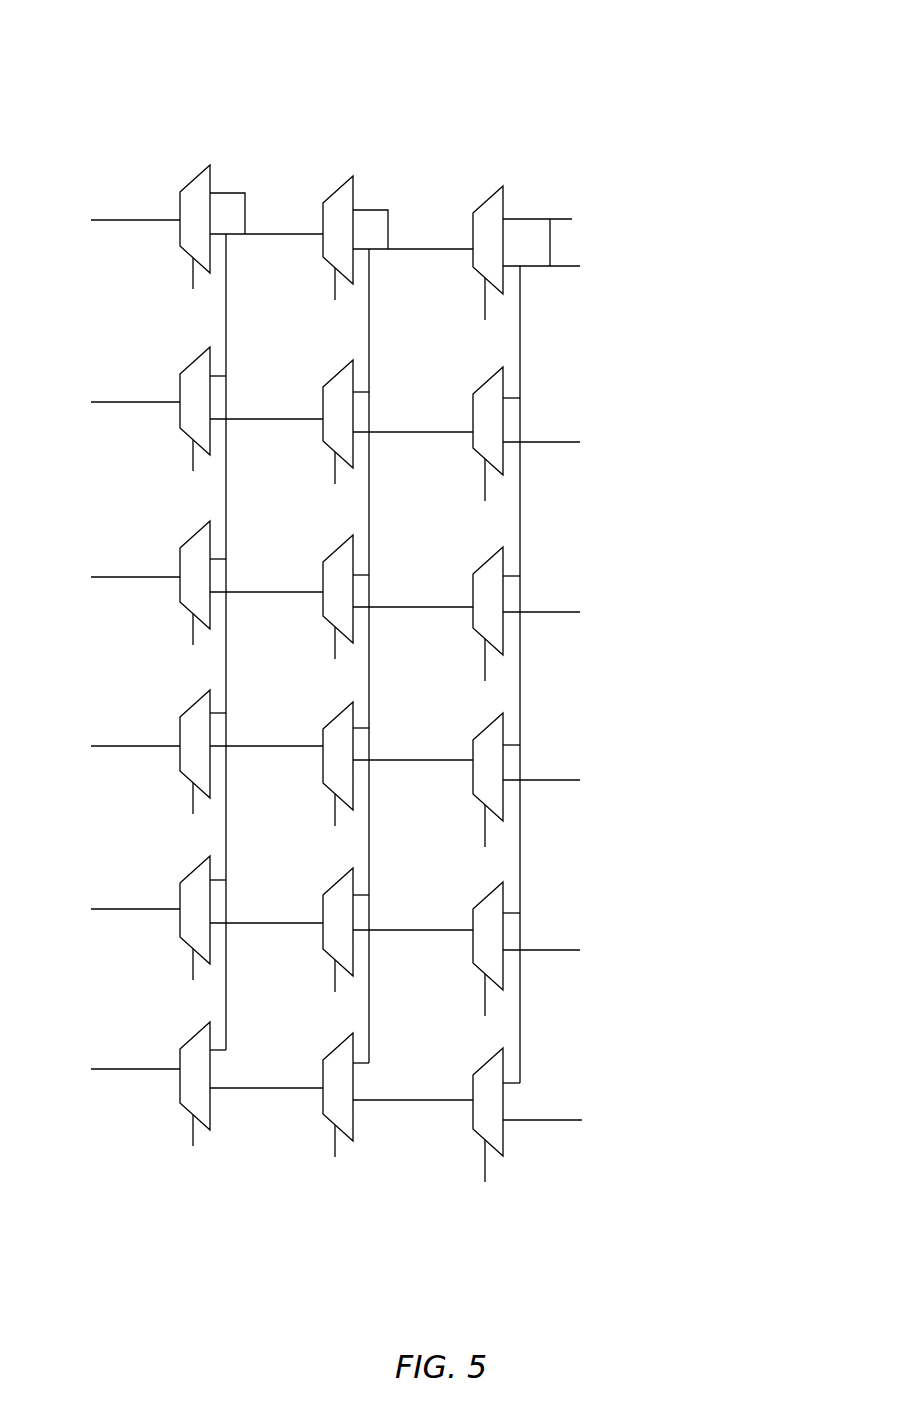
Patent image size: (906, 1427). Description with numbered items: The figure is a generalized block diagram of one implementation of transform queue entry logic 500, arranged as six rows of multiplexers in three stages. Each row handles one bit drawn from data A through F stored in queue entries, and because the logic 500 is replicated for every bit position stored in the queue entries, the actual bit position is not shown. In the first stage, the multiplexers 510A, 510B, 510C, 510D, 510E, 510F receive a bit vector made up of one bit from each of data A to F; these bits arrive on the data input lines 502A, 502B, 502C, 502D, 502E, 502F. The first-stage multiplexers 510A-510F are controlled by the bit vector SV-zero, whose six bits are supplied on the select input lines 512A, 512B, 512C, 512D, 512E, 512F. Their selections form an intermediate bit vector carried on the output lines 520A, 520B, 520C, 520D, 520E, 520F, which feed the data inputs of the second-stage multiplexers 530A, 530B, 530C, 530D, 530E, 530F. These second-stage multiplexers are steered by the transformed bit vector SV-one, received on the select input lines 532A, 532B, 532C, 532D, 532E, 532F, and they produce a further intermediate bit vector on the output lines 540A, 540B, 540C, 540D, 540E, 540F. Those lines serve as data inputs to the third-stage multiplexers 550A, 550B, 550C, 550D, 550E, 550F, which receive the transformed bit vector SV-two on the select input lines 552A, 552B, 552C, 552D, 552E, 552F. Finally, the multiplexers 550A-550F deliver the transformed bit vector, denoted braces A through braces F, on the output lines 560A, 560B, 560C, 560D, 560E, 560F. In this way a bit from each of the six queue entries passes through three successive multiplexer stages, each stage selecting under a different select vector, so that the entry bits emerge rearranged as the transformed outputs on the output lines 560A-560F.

The transform queue entry logic 500 is at (652, 106).
The multiplexer 510F is at (488, 240).
The multiplexer 510E is at (496, 421).
The multiplexer 510D is at (496, 601).
The multiplexer 510C is at (496, 767).
The multiplexer 510B is at (496, 936).
The multiplexer 510A is at (496, 1102).
The multiplexer 530F is at (355, 230).
The multiplexer 530E is at (346, 414).
The multiplexer 530D is at (346, 589).
The multiplexer 530C is at (346, 756).
The multiplexer 530B is at (346, 922).
The multiplexer 530A is at (346, 1087).
The multiplexer 550F is at (212, 219).
The multiplexer 550E is at (203, 401).
The multiplexer 550D is at (203, 575).
The multiplexer 550C is at (203, 744).
The multiplexer 550B is at (203, 910).
The multiplexer 550A is at (203, 1076).
The data input line 502F is at (530, 268).
The data input line 502E is at (530, 444).
The data input line 502D is at (530, 614).
The data input line 502C is at (530, 782).
The data input line 502B is at (530, 952).
The data input line 502A is at (518, 1123).
The select input line 512F is at (485, 301).
The select input line 512E is at (485, 484).
The select input line 512D is at (485, 659).
The select input line 512C is at (485, 812).
The select input line 512B is at (485, 982).
The select input line 512A is at (485, 1152).
The output line 520F is at (455, 252).
The output line 520E is at (455, 435).
The output line 520D is at (455, 610).
The output line 520C is at (455, 763).
The output line 520B is at (455, 933).
The output line 520A is at (455, 1103).
The select input line 532F is at (333, 286).
The select input line 532E is at (333, 470).
The select input line 532D is at (333, 645).
The select input line 532C is at (333, 812).
The select input line 532B is at (333, 978).
The select input line 532A is at (333, 1143).
The output line 540F is at (305, 235).
The output line 540E is at (305, 420).
The output line 540D is at (305, 593).
The output line 540C is at (305, 747).
The output line 540B is at (305, 924).
The output line 540A is at (305, 1089).
The select input line 552F is at (190, 271).
The select input line 552E is at (190, 453).
The select input line 552D is at (190, 627).
The select input line 552C is at (190, 796).
The select input line 552B is at (190, 962).
The select input line 552A is at (190, 1128).
The output line 560F is at (132, 220).
The output line 560E is at (132, 402).
The output line 560D is at (132, 577).
The output line 560C is at (132, 746).
The output line 560B is at (132, 909).
The output line 560A is at (132, 1069).